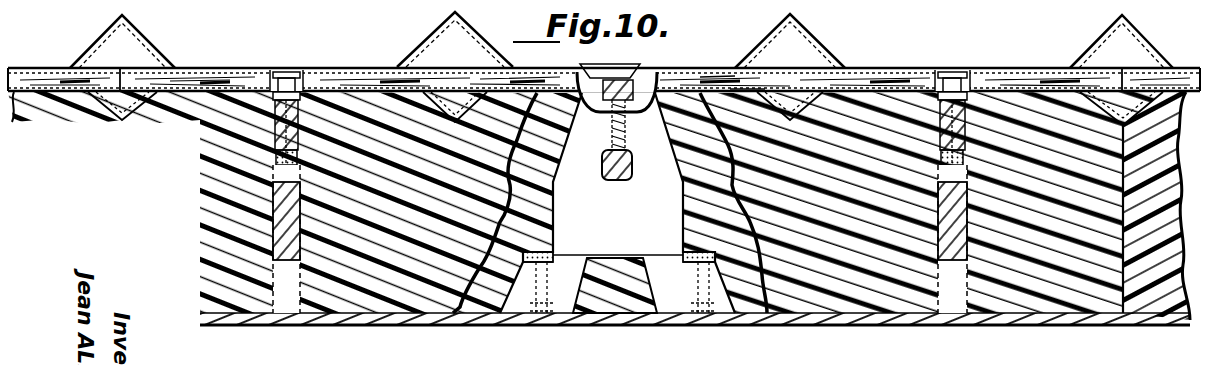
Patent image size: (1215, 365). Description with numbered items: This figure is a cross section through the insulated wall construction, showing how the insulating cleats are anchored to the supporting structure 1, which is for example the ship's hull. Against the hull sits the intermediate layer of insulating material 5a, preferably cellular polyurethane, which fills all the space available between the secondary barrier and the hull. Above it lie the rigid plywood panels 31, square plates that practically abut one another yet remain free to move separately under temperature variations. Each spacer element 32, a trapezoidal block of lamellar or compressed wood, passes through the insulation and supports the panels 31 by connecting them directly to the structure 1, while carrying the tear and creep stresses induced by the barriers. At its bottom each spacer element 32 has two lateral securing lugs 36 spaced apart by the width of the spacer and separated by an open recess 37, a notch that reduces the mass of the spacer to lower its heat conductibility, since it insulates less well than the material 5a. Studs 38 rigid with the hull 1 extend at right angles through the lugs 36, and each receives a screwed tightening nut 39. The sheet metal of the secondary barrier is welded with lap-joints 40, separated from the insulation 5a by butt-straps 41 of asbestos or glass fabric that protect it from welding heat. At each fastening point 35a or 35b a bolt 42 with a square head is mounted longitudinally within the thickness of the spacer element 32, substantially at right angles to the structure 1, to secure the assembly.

The supporting structure 1 is at (197, 1).
The intermediate layer of insulating material 5a is at (1181, 165).
The panels 31 is at (33, 78).
The spacer element 32 is at (947, 333).
The fastening point 35a is at (293, 61).
The fastening point 35b is at (614, 62).
The lateral securing lugs 36 is at (513, 302).
The open recess 37 is at (640, 302).
The studs 38 is at (553, 313).
The tightening nut 39 is at (552, 253).
The lap-joints 40 is at (713, 77).
The butt-straps 41 is at (745, 88).
The bolt 42 is at (272, 85).